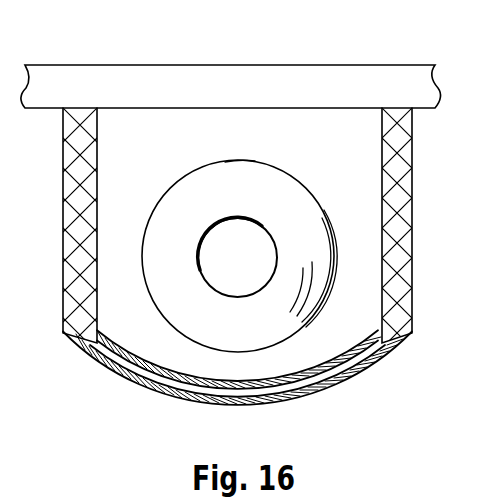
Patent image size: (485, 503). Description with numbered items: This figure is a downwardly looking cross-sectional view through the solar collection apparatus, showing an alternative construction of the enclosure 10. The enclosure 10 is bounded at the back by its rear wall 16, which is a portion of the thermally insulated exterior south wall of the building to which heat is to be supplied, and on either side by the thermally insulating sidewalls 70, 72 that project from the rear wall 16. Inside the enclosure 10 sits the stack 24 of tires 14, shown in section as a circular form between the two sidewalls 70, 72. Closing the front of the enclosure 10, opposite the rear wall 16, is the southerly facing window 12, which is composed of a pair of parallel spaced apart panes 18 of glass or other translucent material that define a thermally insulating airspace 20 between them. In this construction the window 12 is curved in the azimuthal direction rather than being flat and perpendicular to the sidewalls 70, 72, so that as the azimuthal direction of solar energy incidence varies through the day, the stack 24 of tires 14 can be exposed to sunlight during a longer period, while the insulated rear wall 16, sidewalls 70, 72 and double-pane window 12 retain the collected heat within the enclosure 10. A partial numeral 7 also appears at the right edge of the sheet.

The enclosure 10 is at (100, 398).
The window 12 is at (329, 394).
The tires 14 is at (177, 198).
The rear wall 16 is at (172, 90).
The panes 18 is at (173, 394).
The airspace 20 is at (352, 363).
The stack 24 is at (246, 158).
The sidewall 70 is at (82, 260).
The sidewall 72 is at (403, 237).
The partial numeral 7 is at (480, 275).